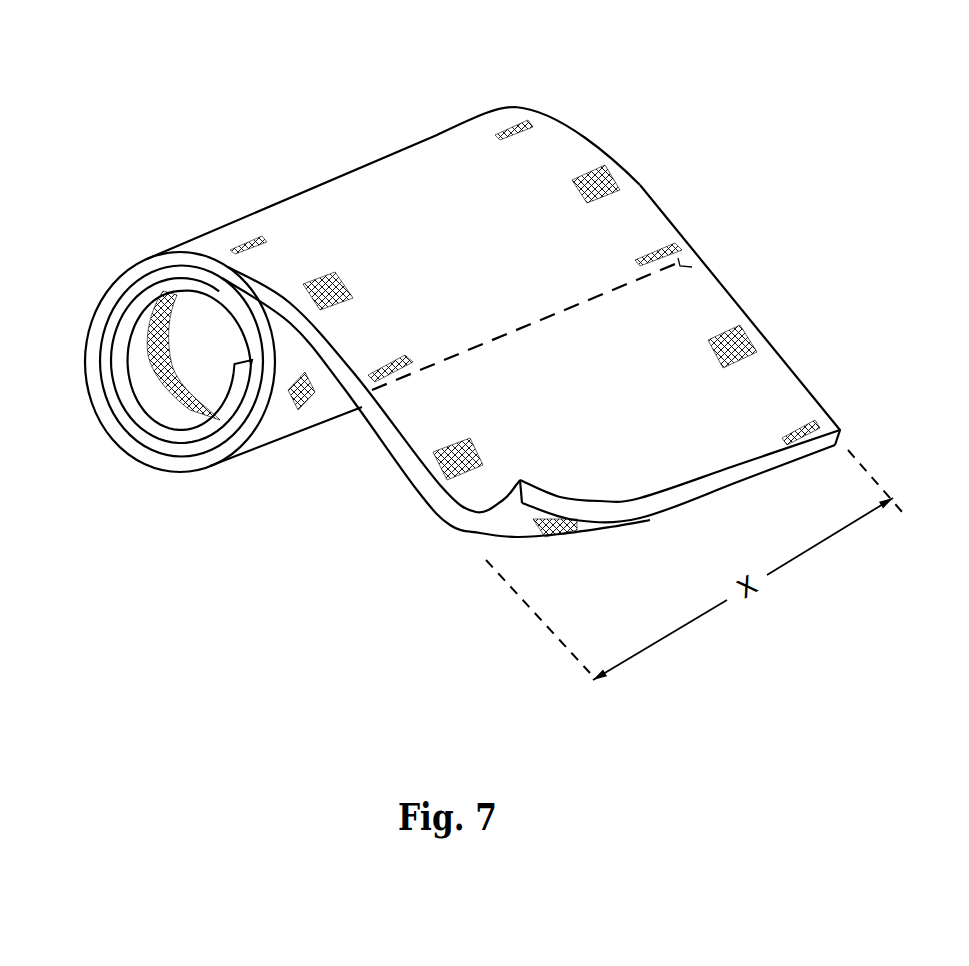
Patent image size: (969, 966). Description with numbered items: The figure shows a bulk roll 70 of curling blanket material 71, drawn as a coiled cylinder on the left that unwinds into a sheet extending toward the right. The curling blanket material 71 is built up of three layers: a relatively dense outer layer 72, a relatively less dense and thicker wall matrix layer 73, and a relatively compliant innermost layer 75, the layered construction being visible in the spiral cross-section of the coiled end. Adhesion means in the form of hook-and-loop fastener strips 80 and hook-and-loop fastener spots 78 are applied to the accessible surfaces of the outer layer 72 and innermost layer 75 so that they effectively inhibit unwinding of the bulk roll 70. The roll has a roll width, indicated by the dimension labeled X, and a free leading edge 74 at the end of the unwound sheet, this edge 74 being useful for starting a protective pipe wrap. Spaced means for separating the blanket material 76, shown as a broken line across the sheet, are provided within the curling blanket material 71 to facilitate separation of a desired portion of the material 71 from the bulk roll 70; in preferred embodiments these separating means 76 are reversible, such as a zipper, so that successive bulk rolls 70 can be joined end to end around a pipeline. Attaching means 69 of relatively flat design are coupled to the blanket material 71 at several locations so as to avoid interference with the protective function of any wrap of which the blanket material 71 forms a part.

The attaching means 69 is at (518, 124).
The bulk roll 70 is at (194, 69).
The curling blanket material 71 is at (433, 133).
The outer layer 72 is at (716, 297).
The wall matrix layer 73 is at (167, 463).
The free leading edge 74 is at (770, 466).
The innermost layer 75 is at (510, 530).
The means for separating the blanket material 76 is at (682, 266).
The hook-and-loop fastener spots 78 is at (325, 272).
The hook-and-loop fastener strips 80 is at (158, 378).